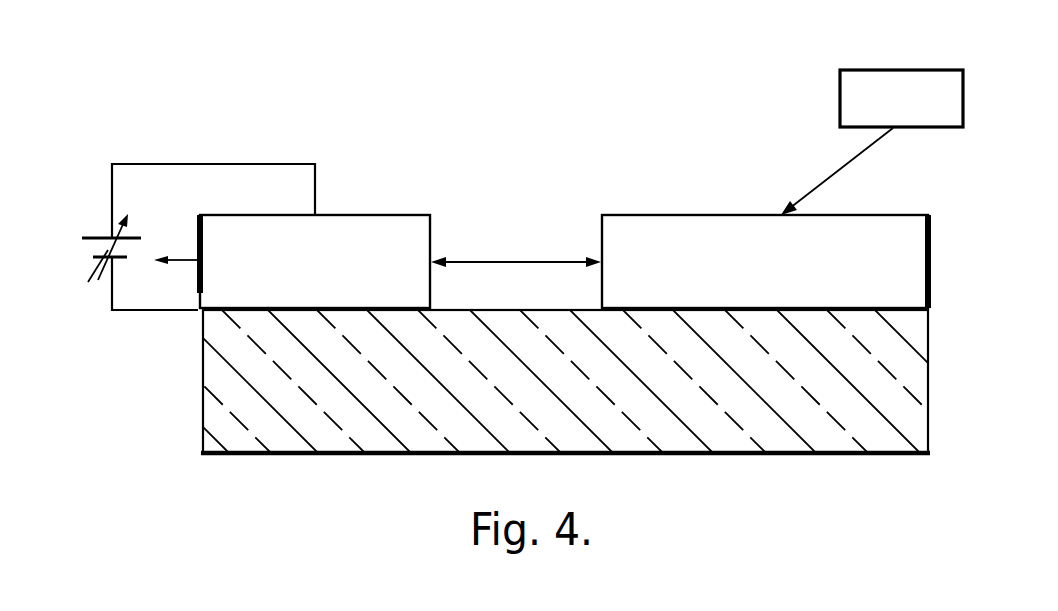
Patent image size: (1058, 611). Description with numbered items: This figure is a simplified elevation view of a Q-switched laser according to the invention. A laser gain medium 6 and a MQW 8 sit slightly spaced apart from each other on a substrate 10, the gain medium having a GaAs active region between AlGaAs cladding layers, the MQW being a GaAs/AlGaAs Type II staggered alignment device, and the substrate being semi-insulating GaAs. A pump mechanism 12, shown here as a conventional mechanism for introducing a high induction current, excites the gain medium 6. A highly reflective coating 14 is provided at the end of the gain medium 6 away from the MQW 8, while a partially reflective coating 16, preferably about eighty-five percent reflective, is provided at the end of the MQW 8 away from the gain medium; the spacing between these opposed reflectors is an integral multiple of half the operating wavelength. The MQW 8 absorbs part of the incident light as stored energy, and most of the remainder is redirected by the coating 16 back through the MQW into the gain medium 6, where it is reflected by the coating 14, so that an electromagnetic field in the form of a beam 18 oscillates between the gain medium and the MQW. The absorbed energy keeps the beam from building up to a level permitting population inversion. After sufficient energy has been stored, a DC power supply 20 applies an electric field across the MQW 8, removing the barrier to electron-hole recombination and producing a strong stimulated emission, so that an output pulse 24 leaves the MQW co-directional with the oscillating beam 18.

The laser gain medium 6 is at (633, 215).
The MQW 8 is at (383, 215).
The substrate 10 is at (288, 455).
The pump mechanism 12 is at (840, 72).
The highly reflective coating 14 is at (931, 225).
The partially reflective coating 16 is at (198, 228).
The beam 18 is at (505, 260).
The DC power supply 20 is at (196, 238).
The output pulse 24 is at (186, 260).